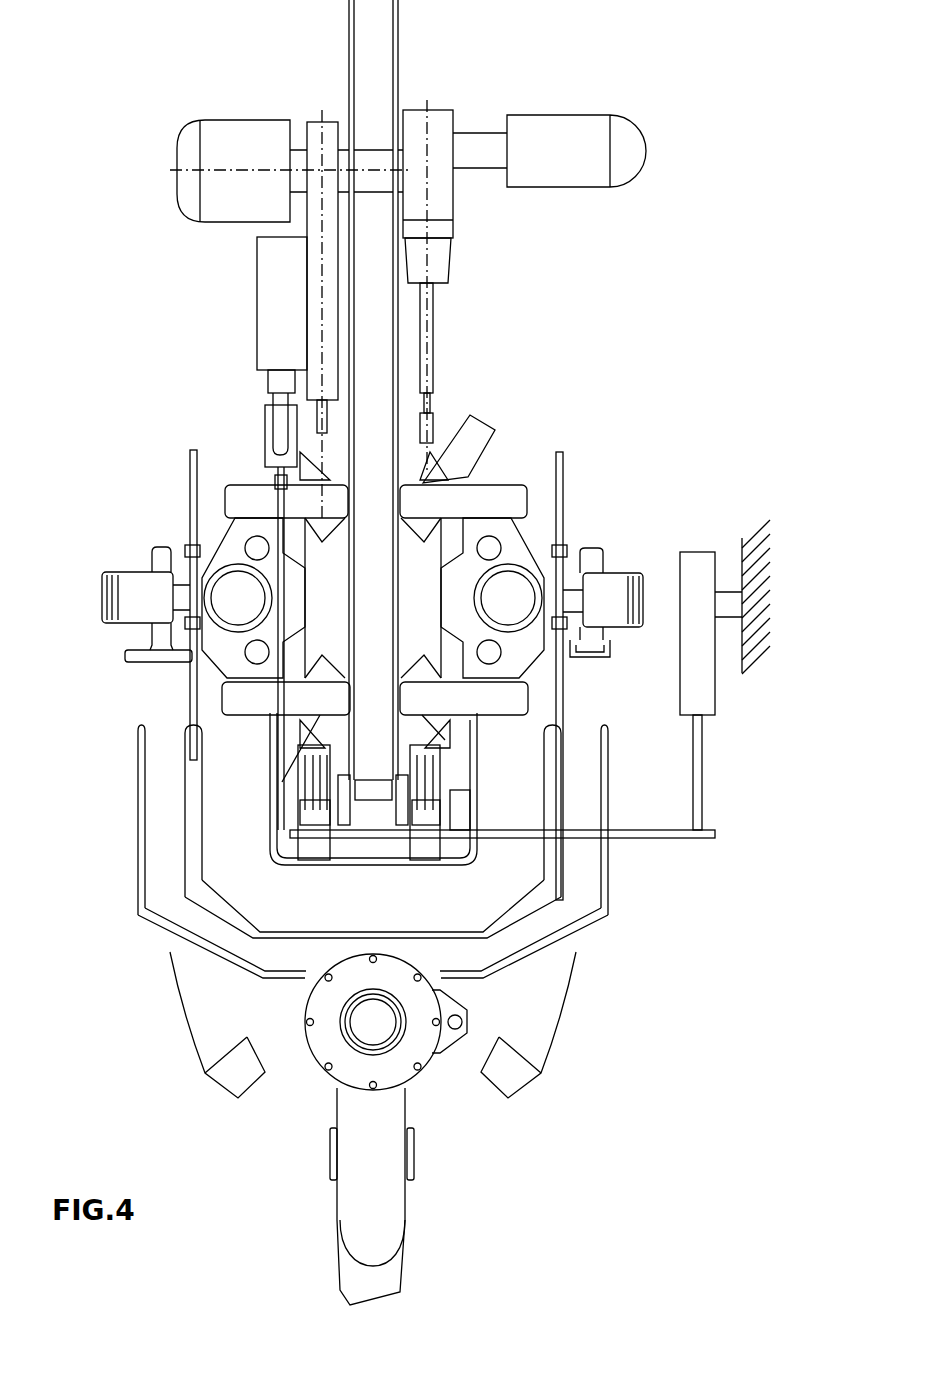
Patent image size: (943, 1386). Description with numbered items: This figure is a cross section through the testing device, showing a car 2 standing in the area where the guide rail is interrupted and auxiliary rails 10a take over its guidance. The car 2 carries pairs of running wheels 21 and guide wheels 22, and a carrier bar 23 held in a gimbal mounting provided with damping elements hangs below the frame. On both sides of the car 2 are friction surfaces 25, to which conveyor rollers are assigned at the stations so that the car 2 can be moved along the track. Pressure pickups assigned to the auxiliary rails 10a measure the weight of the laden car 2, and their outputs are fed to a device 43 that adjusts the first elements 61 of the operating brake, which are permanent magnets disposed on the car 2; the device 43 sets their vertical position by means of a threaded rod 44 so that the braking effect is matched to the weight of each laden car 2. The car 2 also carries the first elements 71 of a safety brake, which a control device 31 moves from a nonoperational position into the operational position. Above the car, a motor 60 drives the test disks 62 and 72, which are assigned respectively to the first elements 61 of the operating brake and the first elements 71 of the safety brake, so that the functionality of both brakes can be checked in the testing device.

The car 2 is at (170, 952).
The auxiliary rail 10a is at (140, 656).
The running wheel 21 is at (258, 431).
The guide wheel 22 is at (238, 496).
The carrier bar 23 is at (385, 1272).
The friction surface 25 is at (104, 599).
The control device 31 is at (272, 300).
The device for adjusting the first elements of the operating brake 43 is at (437, 207).
The threaded rod 44 is at (430, 305).
The motor 60 is at (228, 207).
The first elements of the operating brake 61 is at (372, 793).
The test disk 62 is at (396, 357).
The first elements of the safety brake 71 is at (360, 826).
The test disk 72 is at (348, 356).